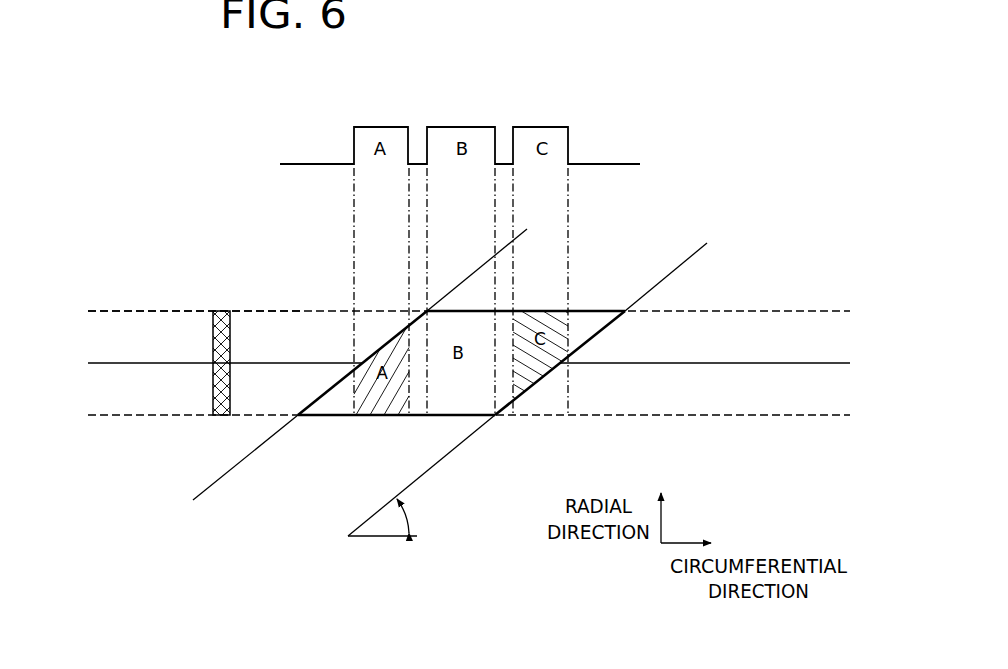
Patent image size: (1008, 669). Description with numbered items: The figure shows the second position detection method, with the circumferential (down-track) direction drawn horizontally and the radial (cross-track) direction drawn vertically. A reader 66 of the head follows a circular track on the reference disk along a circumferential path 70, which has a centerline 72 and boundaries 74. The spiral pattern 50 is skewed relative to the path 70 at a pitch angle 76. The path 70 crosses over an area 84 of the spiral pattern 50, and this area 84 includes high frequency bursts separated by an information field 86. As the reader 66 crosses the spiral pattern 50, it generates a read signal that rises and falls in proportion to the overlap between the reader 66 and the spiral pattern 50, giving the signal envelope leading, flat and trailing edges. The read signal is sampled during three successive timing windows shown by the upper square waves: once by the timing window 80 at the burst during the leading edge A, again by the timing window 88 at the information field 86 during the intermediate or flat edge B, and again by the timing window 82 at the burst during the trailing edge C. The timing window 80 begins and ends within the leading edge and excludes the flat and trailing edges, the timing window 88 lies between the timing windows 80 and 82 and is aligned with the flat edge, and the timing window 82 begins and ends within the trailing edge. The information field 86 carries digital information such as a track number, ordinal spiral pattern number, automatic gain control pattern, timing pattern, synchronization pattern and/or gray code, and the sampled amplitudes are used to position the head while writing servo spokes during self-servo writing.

The spiral pattern 50 is at (663, 277).
The reader 66 is at (213, 347).
The circumferential path 70 is at (107, 303).
The centerline 72 is at (130, 363).
The boundaries 74 is at (160, 310).
The pitch angle 76 is at (408, 517).
The timing window 80 is at (375, 112).
The timing window 82 is at (550, 113).
The area 84 is at (541, 381).
The information field 86 is at (457, 388).
The timing window 88 is at (462, 113).